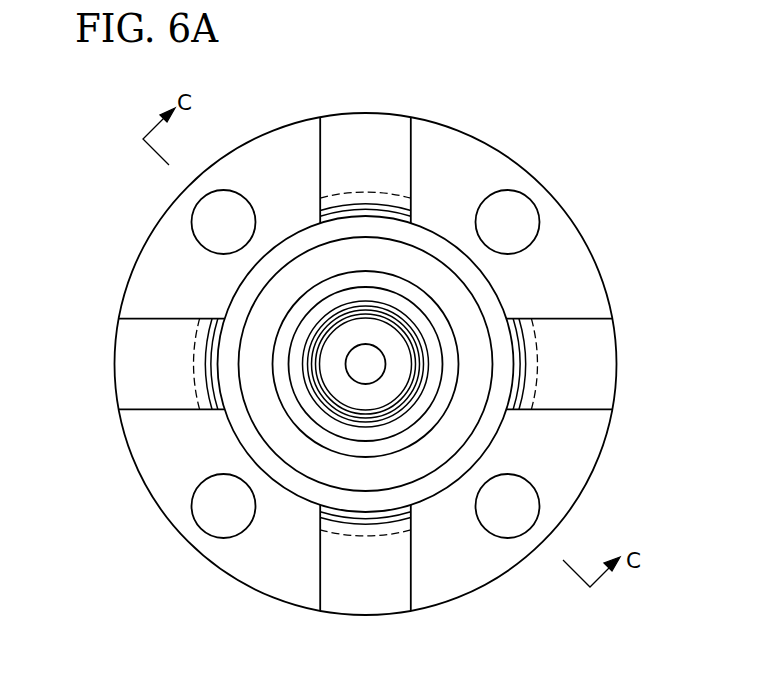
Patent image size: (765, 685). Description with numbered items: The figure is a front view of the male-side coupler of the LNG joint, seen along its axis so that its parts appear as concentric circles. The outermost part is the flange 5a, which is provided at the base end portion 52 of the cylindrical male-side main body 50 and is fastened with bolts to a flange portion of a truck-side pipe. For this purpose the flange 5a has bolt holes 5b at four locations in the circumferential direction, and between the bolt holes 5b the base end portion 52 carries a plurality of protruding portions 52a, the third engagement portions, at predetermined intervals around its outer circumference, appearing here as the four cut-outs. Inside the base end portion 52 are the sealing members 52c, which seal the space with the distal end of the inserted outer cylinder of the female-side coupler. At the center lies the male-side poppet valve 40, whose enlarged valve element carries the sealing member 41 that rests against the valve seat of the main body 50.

The flange 5a is at (495, 142).
The bolt holes 5b is at (527, 222).
The protruding portions 52a is at (392, 110).
The base end portion 52 is at (585, 443).
The sealing members 52c is at (487, 440).
The male-side main body 50 is at (313, 463).
The sealing member 41 is at (393, 417).
The male-side poppet valve 40 is at (400, 350).